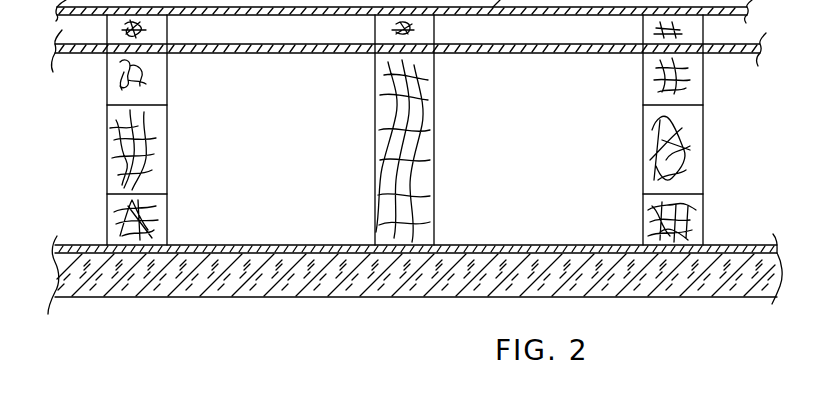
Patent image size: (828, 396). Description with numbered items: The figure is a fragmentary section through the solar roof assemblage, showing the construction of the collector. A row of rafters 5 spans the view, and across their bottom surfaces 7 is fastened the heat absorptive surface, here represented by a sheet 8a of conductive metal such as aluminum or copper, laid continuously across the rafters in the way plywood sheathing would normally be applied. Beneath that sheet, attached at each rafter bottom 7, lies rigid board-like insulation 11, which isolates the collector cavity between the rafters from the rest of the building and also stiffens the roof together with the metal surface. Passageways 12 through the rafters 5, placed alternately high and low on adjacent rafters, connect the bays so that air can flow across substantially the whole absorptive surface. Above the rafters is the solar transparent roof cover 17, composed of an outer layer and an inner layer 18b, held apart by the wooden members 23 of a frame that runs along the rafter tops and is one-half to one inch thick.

The rafter 5 is at (168, 72).
The bottom surface of rafter 7 is at (148, 245).
The sheet of heat absorptive surface 8a is at (275, 245).
The insulation 11 is at (321, 293).
The passageway 12 is at (157, 152).
The solar transparent roof cover 17 is at (404, 20).
The inner layer 18b is at (598, 51).
The wooden member 23 is at (155, 33).